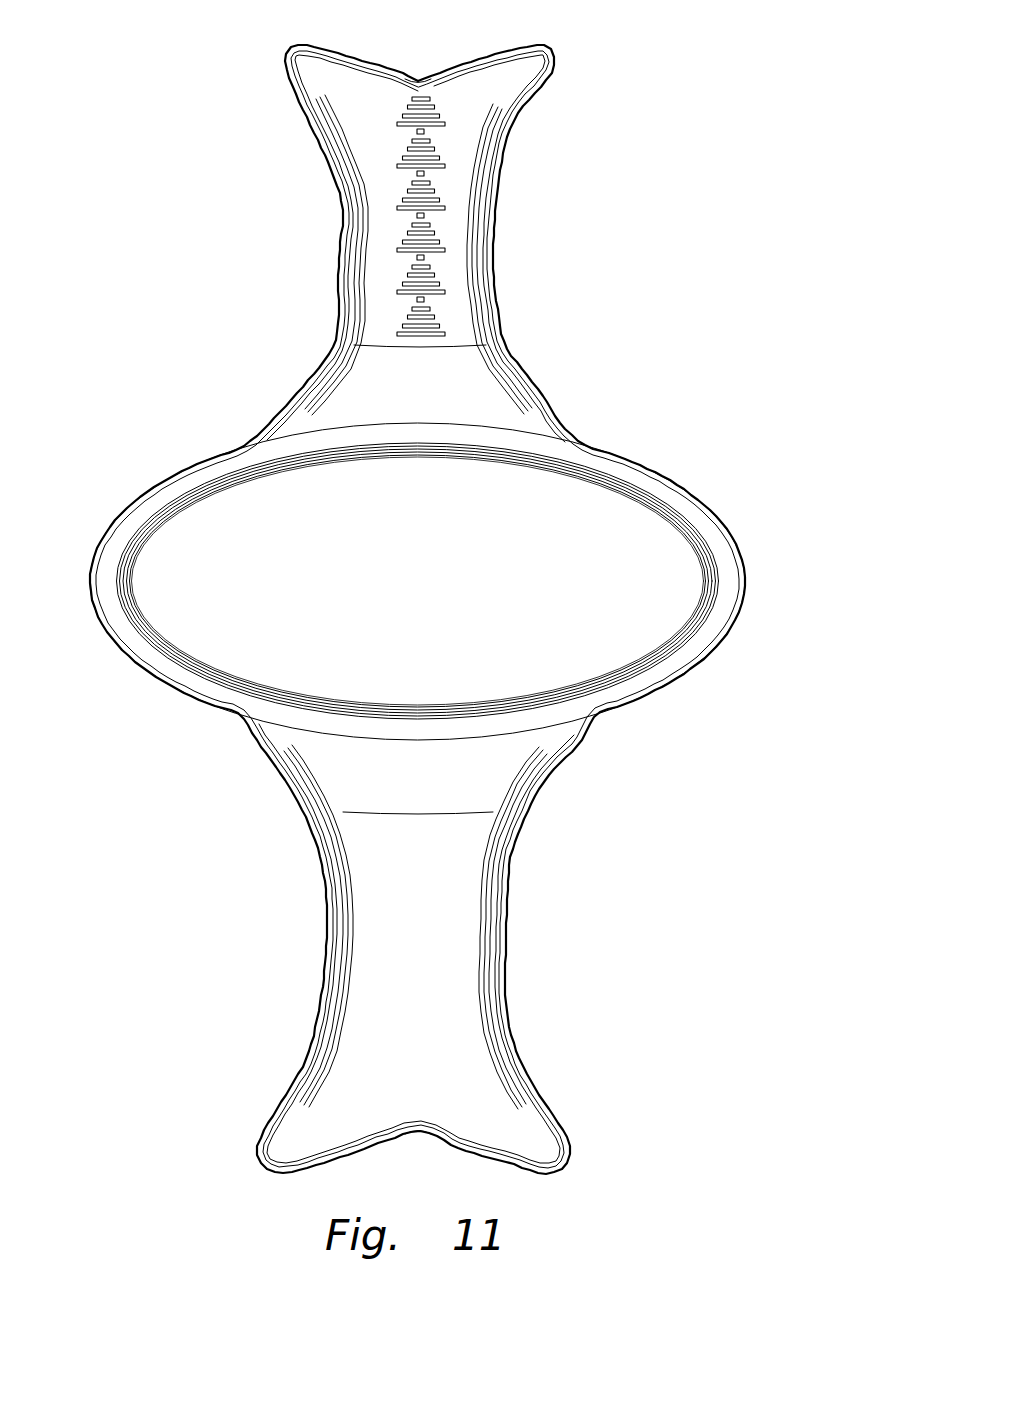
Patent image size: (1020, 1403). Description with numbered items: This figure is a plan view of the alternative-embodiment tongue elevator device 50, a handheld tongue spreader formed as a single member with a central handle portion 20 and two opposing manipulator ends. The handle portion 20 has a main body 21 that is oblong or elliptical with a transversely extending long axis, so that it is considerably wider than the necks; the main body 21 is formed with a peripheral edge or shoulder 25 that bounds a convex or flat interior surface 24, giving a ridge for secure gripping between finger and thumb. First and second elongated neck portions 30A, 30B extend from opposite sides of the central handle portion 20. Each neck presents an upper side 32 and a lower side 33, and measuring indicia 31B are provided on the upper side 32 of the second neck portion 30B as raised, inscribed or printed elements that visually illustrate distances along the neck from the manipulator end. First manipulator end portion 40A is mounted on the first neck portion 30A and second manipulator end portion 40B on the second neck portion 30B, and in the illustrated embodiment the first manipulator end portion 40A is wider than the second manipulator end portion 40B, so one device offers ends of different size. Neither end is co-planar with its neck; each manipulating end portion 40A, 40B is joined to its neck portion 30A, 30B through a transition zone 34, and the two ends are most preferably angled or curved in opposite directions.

The tongue elevator device 50 is at (127, 419).
The handle portion 20 is at (716, 480).
The main body 21 is at (690, 685).
The interior surface 24 is at (253, 637).
The peripheral edge or shoulder 25 is at (137, 648).
The first elongated neck portion 30A is at (585, 895).
The second elongated neck portion 30B is at (565, 233).
The measuring indicia 31B is at (438, 196).
The upper side 32 is at (385, 843).
The lower side 33 is at (377, 311).
The transition zone 34 is at (383, 226).
The first manipulator end portion 40A is at (595, 1078).
The second manipulator end portion 40B is at (576, 115).